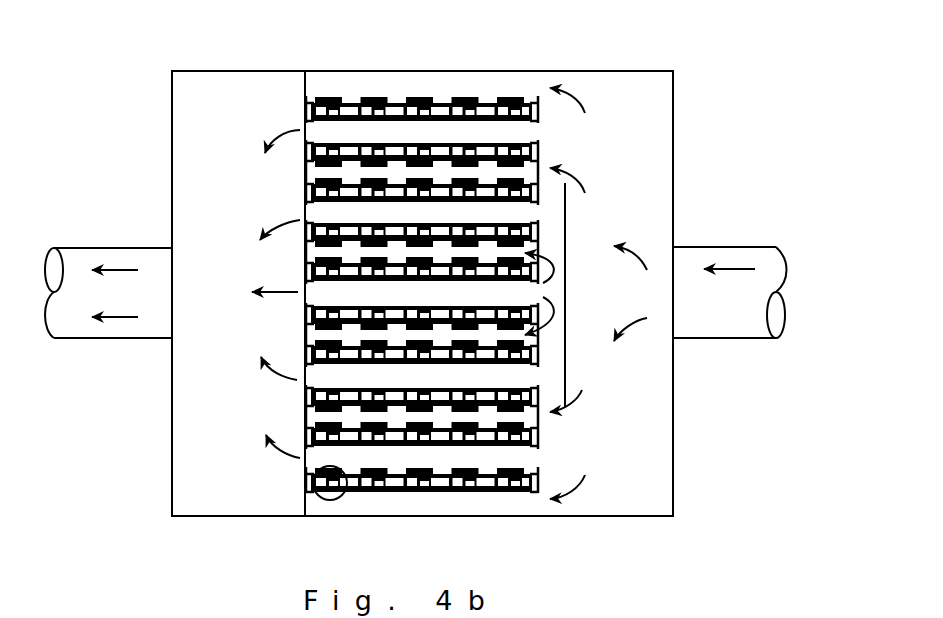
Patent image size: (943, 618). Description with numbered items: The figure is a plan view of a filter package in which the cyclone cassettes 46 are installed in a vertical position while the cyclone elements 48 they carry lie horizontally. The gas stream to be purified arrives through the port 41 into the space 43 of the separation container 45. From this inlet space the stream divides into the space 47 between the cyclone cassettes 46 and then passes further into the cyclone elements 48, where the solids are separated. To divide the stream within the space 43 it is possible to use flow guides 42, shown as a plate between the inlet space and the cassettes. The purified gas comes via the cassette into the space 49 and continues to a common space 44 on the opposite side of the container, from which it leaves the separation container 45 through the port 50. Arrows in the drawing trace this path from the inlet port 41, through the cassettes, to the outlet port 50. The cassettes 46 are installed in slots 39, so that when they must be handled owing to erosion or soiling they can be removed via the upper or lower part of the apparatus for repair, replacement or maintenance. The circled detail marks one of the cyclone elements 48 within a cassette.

The slots 39 is at (425, 293).
The port 41 is at (707, 318).
The flow guides 42 is at (567, 368).
The space 43 is at (627, 483).
The common space 44 is at (206, 475).
The separation container 45 is at (673, 175).
The cyclone cassettes 46 is at (543, 478).
The space 47 is at (448, 414).
The cyclone elements 48 is at (330, 500).
The space 49 is at (447, 135).
The port 50 is at (120, 326).